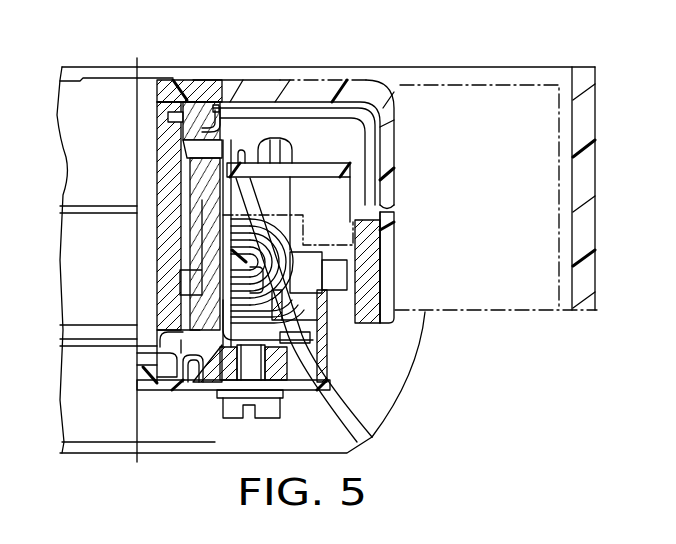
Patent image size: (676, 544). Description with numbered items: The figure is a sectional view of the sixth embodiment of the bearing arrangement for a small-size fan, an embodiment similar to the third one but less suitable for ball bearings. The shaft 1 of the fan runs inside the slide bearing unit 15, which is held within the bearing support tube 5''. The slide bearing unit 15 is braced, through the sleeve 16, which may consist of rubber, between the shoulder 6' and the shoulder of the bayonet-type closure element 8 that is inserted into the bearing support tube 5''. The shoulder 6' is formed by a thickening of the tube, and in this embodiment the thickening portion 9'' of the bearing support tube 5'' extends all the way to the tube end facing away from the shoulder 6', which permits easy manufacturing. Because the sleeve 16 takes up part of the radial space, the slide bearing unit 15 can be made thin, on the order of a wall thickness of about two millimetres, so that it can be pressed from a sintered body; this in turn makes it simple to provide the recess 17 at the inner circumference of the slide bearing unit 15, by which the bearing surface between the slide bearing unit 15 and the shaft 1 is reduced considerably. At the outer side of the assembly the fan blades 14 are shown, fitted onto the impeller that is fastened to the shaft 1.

The shaft 1 is at (146, 102).
The slide bearing unit 15 is at (171, 103).
The bearing support tube 5'' is at (219, 83).
The sleeve 16 is at (222, 175).
The shoulder 6' is at (288, 239).
The thickening portion 9'' is at (141, 146).
The recess 17 is at (160, 262).
The fan blades 14 is at (468, 300).
The bayonet-type closure element 8 is at (148, 378).